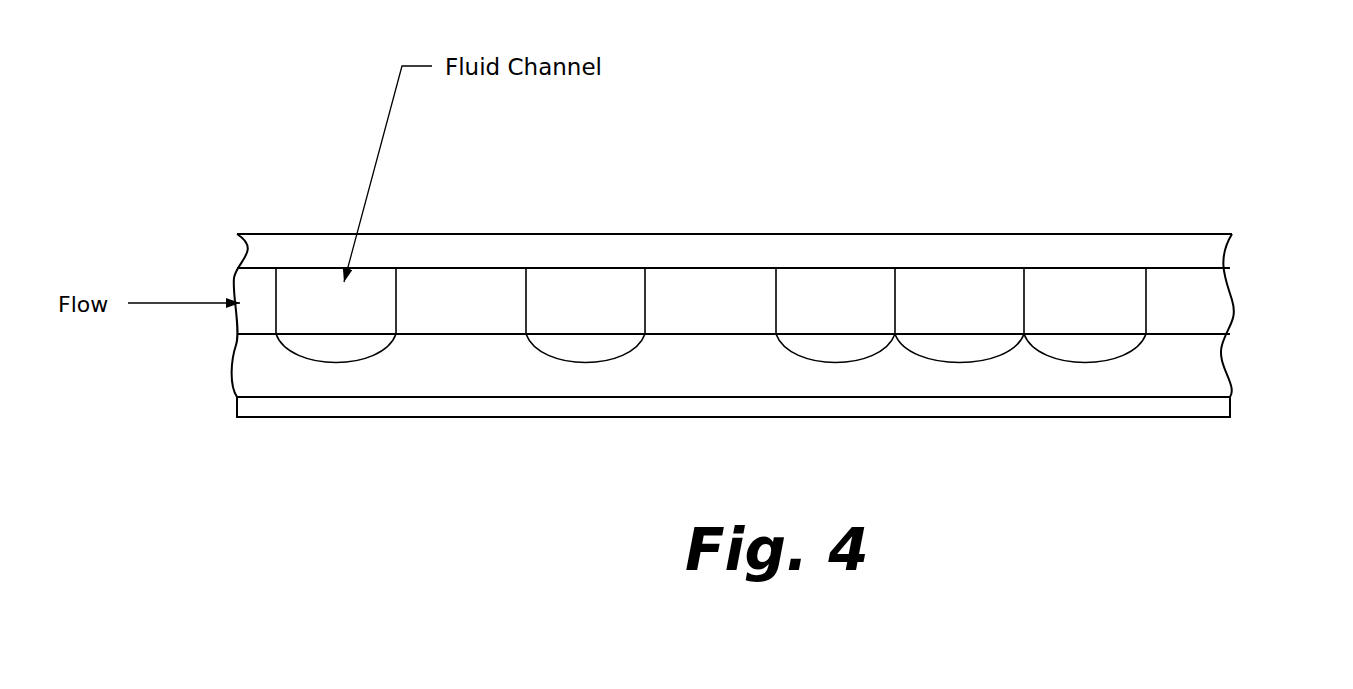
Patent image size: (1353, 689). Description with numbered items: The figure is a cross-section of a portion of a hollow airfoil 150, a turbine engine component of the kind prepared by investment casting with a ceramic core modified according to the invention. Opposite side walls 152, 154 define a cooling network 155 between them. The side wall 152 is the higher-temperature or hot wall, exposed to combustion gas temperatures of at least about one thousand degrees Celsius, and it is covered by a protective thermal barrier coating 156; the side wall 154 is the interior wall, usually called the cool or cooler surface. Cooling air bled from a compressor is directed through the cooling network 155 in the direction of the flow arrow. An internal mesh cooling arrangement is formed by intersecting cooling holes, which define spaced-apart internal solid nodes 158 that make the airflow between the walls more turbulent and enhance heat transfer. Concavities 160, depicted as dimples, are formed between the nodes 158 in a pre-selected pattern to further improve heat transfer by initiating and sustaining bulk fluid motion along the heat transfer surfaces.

The hollow airfoil 150 is at (1064, 124).
The side wall 152 is at (1247, 335).
The side wall 154 is at (1247, 233).
The cooling network 155 is at (250, 287).
The thermal barrier coating 156 is at (307, 408).
The internal solid nodes 158 is at (487, 288).
The concavities 160 is at (377, 337).